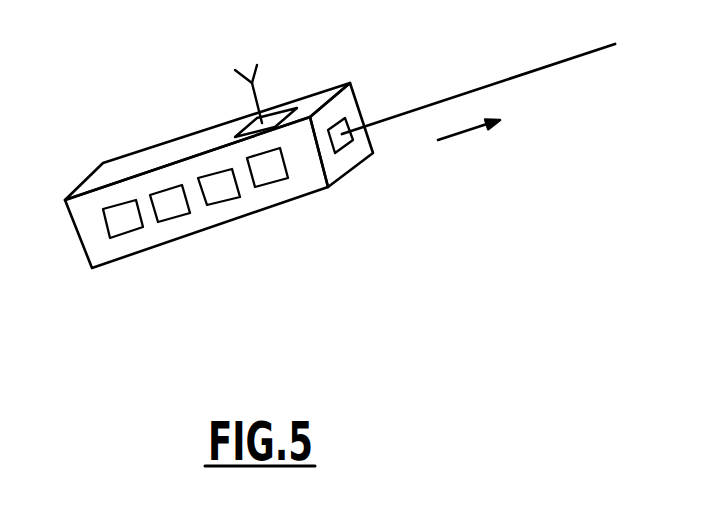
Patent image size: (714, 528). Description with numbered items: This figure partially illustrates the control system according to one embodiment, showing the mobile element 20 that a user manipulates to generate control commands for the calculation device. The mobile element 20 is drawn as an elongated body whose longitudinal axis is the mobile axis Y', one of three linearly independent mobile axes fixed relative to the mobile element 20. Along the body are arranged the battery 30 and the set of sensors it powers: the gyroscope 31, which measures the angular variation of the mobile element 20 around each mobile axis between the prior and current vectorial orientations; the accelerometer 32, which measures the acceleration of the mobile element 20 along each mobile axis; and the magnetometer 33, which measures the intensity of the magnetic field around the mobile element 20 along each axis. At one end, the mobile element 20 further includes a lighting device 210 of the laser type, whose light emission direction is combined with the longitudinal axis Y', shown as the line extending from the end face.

The mobile element 20 is at (340, 213).
The battery 30 is at (128, 235).
The gyroscope 31 is at (177, 217).
The accelerometer 32 is at (223, 202).
The magnetometer 33 is at (273, 185).
The lighting device 210 is at (372, 193).